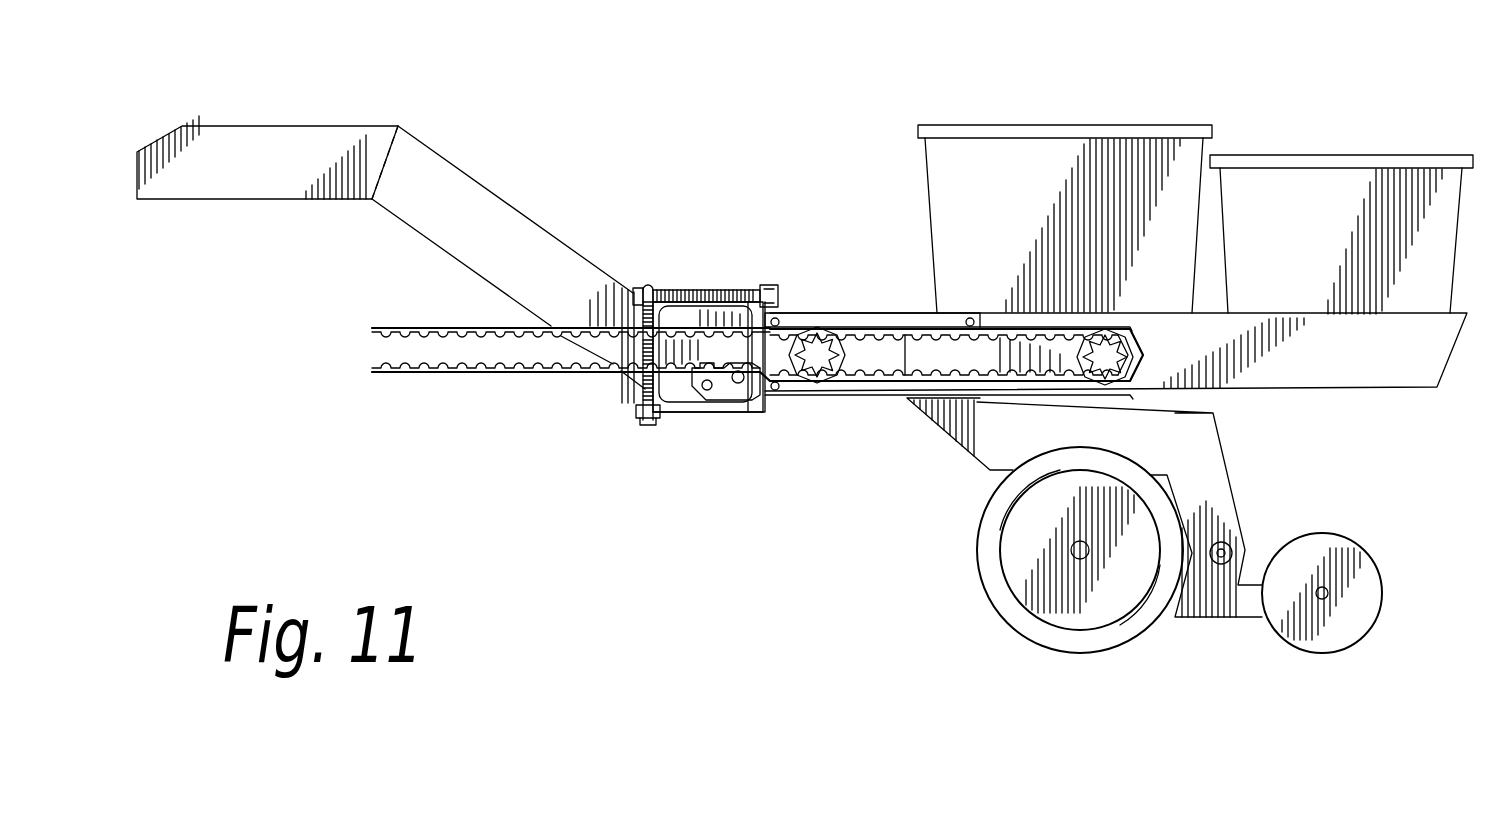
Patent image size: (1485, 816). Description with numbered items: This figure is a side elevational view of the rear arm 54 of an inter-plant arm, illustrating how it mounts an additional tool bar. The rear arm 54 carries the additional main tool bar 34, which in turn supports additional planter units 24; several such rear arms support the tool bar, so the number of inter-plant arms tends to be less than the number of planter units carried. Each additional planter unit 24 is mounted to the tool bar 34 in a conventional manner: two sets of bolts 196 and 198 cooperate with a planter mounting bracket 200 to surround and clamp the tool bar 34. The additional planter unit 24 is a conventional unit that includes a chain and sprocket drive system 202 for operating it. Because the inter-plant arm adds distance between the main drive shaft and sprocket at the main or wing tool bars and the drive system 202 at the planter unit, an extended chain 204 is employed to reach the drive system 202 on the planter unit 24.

The additional planter unit 24 is at (1030, 116).
The additional main tool bar 34 is at (710, 300).
The rear arm 54 is at (541, 220).
The bolts 196 is at (745, 292).
The bolts 198 is at (640, 401).
The planter mounting bracket 200 is at (732, 413).
The chain and sprocket drive system 202 is at (824, 388).
The extended chain 204 is at (440, 374).